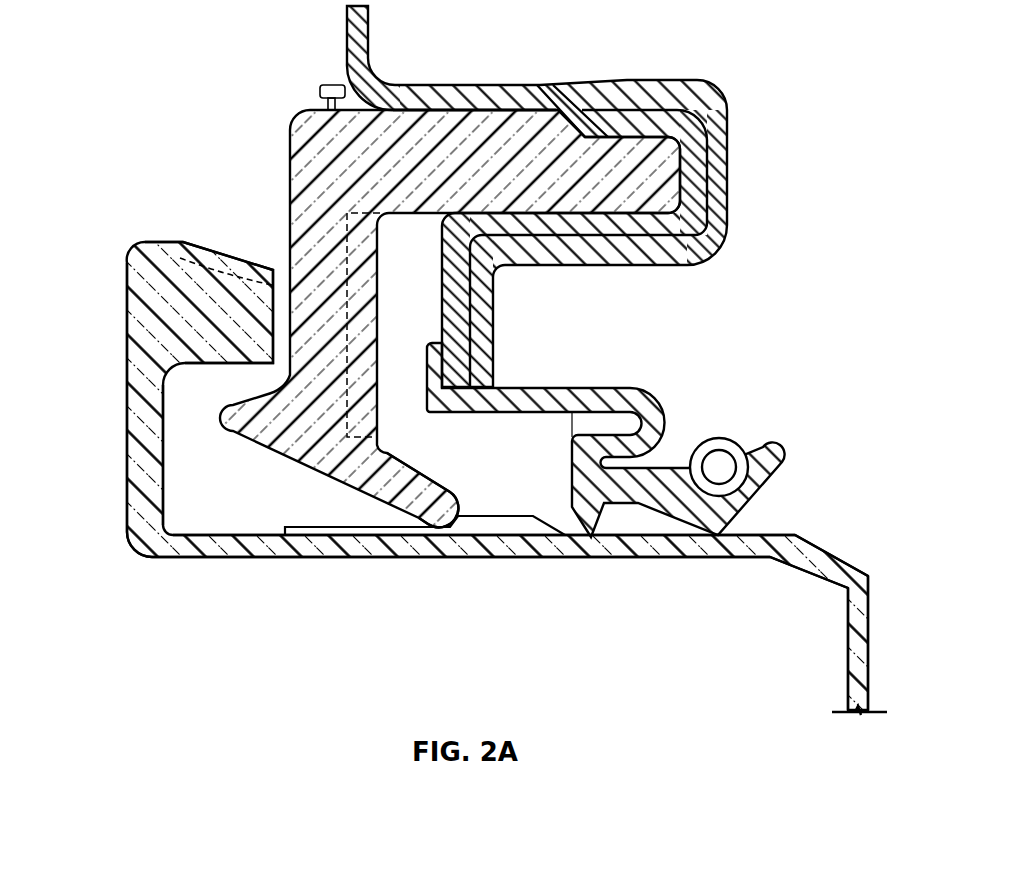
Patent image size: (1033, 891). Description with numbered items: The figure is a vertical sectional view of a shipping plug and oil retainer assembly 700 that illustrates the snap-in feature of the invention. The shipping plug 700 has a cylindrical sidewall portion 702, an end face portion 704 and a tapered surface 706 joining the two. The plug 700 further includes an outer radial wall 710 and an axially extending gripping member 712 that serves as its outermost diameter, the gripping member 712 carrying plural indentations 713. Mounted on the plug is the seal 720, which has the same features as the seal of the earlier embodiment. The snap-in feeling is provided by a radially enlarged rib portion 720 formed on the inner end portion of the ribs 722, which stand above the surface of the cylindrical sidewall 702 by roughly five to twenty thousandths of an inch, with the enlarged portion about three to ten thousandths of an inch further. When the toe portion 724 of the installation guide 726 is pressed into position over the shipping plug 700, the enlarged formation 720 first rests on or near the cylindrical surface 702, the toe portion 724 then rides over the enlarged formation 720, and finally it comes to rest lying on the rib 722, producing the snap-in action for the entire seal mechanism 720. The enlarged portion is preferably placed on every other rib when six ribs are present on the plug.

The shipping plug and oil retainer assembly 700 is at (492, 453).
The cylindrical sidewall portion 702 is at (662, 545).
The end face portion 704 is at (865, 667).
The tapered surface 706 is at (822, 558).
The outer radial wall 710 is at (153, 467).
The axially extending gripping member 712 is at (198, 252).
The indentations 713 is at (232, 270).
The seal 720 is at (532, 271).
The ribs 722 is at (333, 532).
The toe portion 724 is at (433, 497).
The installation guide 726 is at (295, 143).